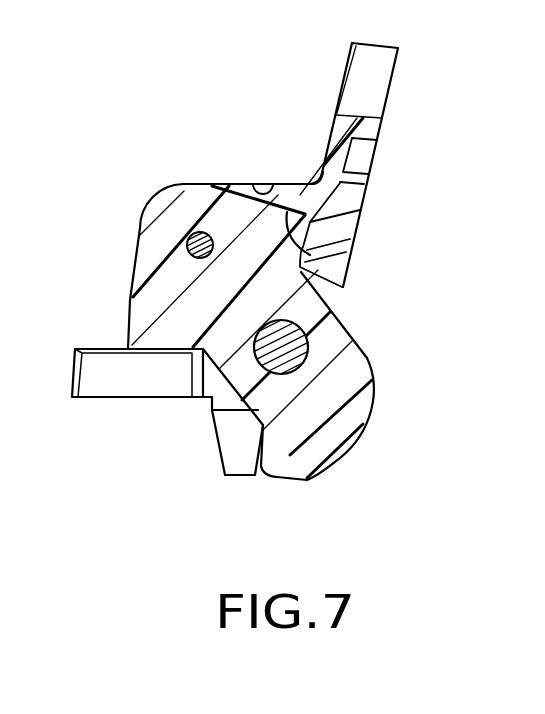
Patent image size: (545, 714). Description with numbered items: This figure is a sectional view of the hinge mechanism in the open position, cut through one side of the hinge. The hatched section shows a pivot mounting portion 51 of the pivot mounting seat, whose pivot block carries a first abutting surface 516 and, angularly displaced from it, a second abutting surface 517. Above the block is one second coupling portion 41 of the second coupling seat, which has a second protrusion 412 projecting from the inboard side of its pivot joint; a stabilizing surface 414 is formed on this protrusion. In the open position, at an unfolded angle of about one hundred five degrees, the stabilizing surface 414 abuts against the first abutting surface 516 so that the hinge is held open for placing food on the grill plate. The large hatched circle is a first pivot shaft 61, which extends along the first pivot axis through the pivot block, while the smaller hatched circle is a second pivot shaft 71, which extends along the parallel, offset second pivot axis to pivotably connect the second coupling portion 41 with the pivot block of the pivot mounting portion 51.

The second coupling portion 41 is at (392, 134).
The second protrusion 412 is at (300, 197).
The stabilizing surface 414 is at (279, 205).
The pivot mounting portion 51 is at (378, 357).
The first abutting surface 516 is at (347, 258).
The second abutting surface 517 is at (162, 330).
The first pivot shaft 61 is at (275, 357).
The second pivot shaft 71 is at (184, 241).